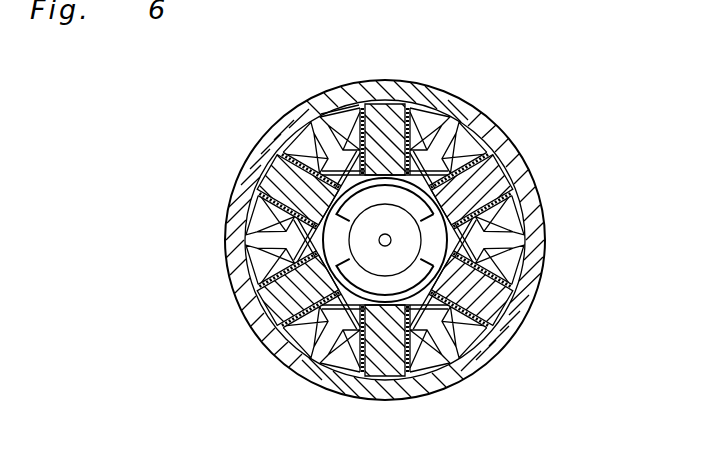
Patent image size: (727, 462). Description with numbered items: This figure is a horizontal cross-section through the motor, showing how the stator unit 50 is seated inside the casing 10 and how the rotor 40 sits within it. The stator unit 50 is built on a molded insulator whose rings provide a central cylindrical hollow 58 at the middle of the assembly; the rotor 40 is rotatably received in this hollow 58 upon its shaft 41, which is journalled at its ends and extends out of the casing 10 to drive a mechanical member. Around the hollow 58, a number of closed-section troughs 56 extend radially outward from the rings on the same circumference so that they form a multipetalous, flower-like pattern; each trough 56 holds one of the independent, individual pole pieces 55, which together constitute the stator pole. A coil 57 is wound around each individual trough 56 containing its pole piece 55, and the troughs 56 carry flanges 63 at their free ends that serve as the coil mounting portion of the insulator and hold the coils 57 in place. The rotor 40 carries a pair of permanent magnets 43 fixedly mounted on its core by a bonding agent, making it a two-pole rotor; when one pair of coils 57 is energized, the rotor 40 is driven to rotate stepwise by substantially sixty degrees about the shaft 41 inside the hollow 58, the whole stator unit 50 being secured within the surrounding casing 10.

The casing 10 is at (507, 140).
The rotor 40 is at (397, 262).
The shaft 41 is at (385, 240).
The permanent magnets 43 is at (320, 147).
The stator unit 50 is at (443, 213).
The pole pieces 55 is at (387, 123).
The troughs 56 is at (373, 198).
The coils 57 is at (447, 100).
The hollow 58 is at (440, 240).
The flanges 63 is at (326, 116).